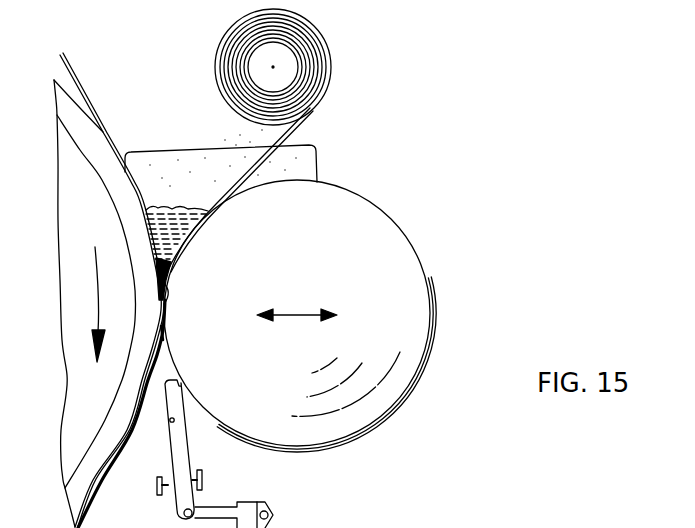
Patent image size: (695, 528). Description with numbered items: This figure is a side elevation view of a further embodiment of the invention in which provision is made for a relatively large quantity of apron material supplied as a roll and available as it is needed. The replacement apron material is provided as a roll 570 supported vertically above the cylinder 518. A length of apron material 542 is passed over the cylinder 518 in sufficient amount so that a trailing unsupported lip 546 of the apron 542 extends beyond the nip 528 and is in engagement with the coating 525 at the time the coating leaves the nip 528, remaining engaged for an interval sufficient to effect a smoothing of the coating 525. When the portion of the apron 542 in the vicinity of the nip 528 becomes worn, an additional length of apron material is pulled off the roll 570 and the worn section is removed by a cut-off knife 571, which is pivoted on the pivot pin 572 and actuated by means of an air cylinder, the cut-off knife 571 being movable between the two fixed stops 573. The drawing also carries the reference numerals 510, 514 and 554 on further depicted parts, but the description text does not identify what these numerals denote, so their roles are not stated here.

The web 510 is at (81, 85).
The curved support body 514 is at (88, 135).
The applicator housing 554 is at (170, 165).
The roll 570 is at (316, 50).
The coating 525 is at (116, 464).
The apron material 542 is at (195, 222).
The nip 528 is at (160, 270).
The trailing unsupported lip 546 is at (163, 333).
The cylinder 518 is at (365, 218).
The cut-off knife 571 is at (178, 455).
The pivot pin 572 is at (174, 422).
The fixed stops 573 is at (157, 490).